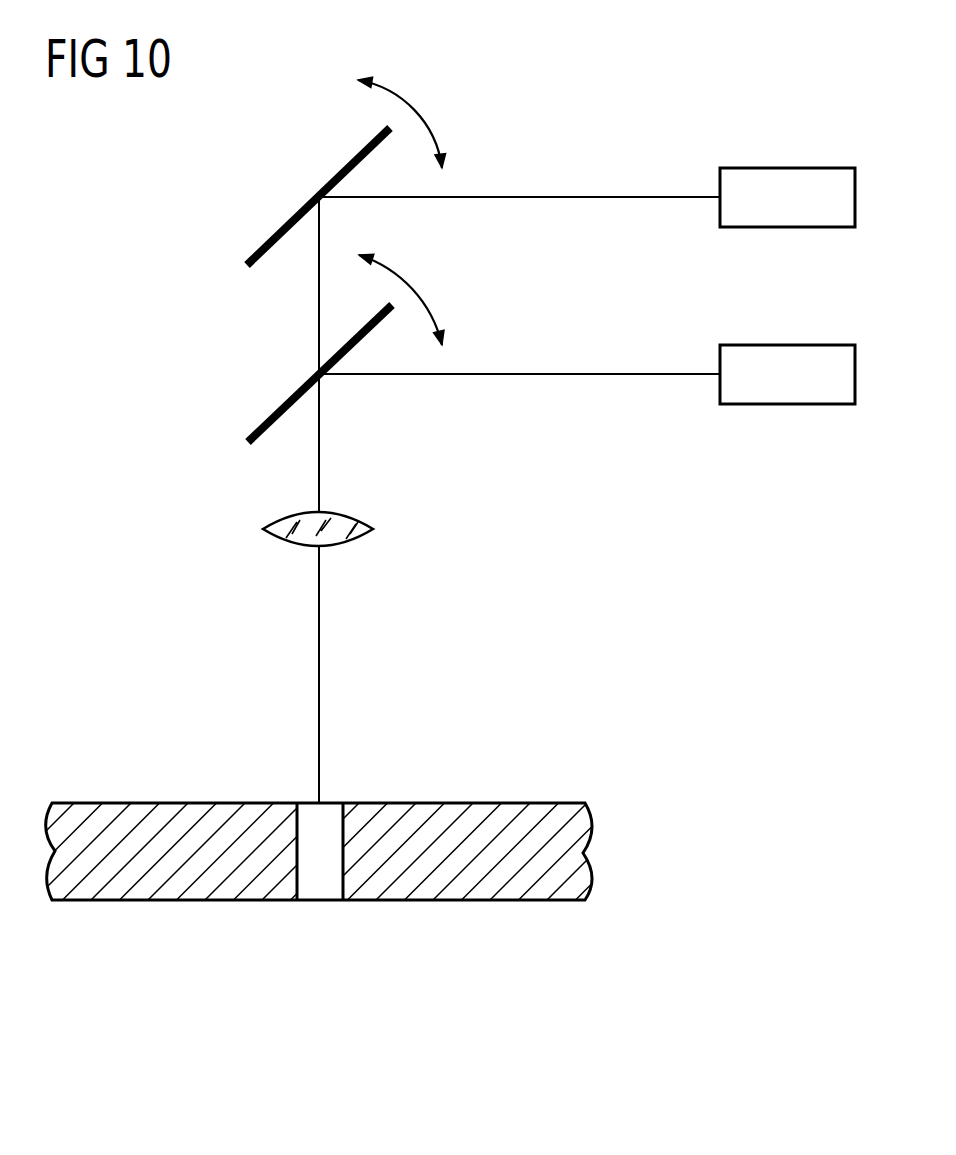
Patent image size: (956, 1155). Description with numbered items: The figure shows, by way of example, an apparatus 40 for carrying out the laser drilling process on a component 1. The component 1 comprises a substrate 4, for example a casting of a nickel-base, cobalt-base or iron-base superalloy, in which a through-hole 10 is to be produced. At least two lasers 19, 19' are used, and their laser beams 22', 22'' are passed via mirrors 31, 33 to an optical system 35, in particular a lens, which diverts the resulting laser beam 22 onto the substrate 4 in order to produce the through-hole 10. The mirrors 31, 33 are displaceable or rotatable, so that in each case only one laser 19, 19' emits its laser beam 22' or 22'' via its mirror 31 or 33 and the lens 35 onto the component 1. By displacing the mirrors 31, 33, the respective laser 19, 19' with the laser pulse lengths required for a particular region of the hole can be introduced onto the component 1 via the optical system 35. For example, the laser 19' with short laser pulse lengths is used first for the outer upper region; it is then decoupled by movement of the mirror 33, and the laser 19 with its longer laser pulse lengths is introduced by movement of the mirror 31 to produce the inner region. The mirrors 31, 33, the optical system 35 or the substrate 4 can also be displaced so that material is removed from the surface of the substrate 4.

The component 1 is at (104, 948).
The substrate 4 is at (567, 852).
The through-hole 10 is at (320, 888).
The laser 19 is at (787, 197).
The laser 19' is at (787, 374).
The laser beam 22 is at (354, 500).
The laser beam 22' is at (519, 178).
The laser beam 22'' is at (519, 355).
The mirror 31 is at (295, 215).
The mirror 33 is at (295, 392).
The optical system 35 is at (290, 517).
The apparatus 40 is at (98, 622).